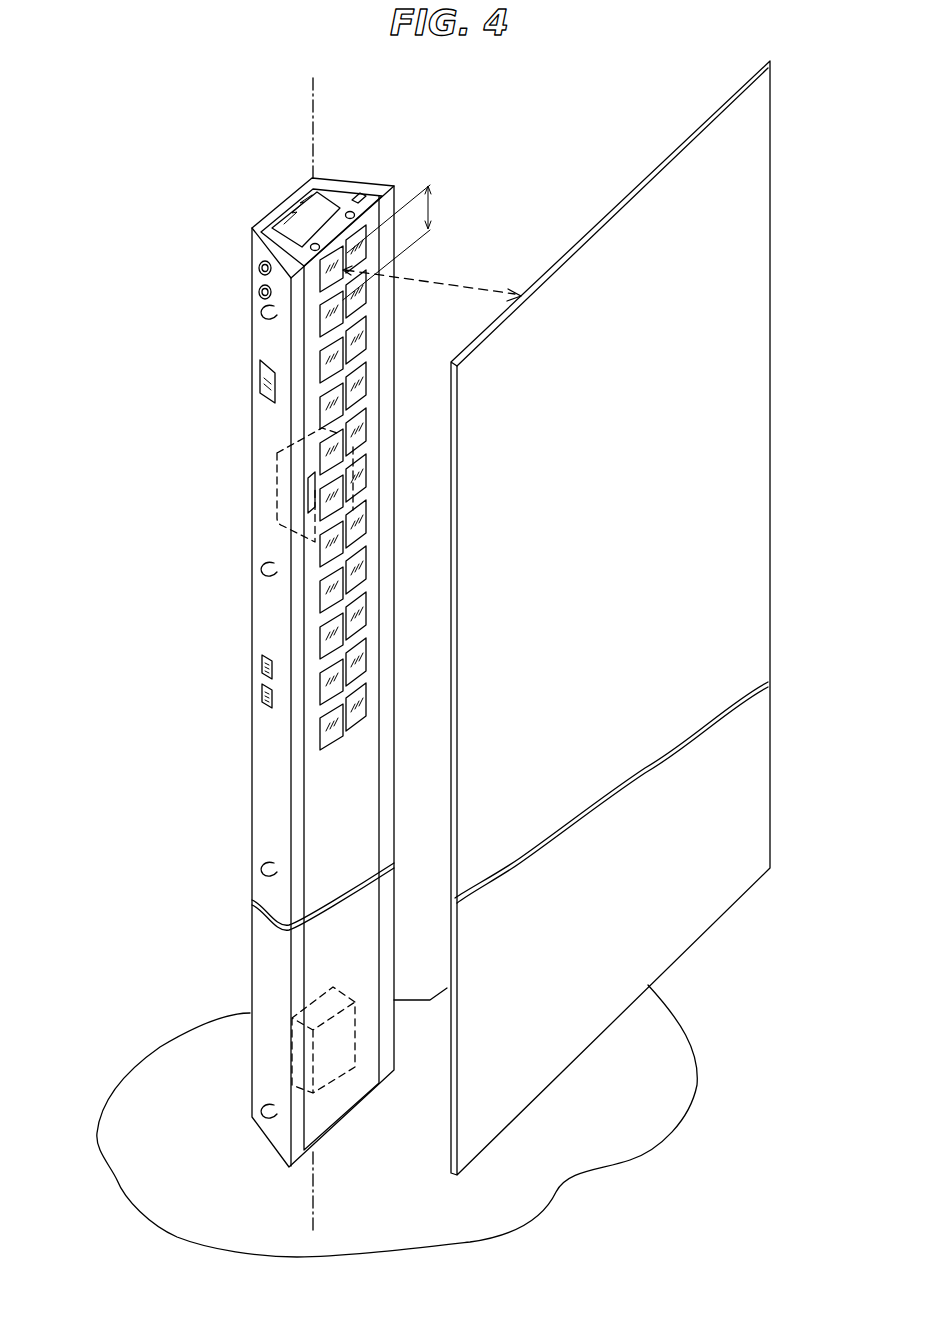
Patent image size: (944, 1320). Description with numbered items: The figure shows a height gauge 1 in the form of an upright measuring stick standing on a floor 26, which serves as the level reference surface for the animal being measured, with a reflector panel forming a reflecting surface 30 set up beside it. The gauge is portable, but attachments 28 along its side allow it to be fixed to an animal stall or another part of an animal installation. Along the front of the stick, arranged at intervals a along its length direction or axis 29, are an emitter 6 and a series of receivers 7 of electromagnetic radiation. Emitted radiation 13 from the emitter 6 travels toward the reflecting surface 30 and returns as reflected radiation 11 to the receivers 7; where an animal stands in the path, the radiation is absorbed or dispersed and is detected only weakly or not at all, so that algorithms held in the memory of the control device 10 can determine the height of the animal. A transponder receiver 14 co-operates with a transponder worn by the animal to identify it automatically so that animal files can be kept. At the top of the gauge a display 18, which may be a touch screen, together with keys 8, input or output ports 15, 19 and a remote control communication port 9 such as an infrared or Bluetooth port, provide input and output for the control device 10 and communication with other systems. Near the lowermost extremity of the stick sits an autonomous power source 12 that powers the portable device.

The height gauge 1 is at (156, 626).
The emitter 6 is at (348, 347).
The receivers 7 is at (332, 386).
The keys 8 is at (259, 292).
The remote control communication port 9 is at (260, 376).
The control device 10 is at (276, 462).
The reflected radiation 11 is at (436, 287).
The autonomous power source 12 is at (300, 1013).
The emitted radiation 13 is at (470, 281).
The transponder receiver 14 is at (307, 490).
The input or output port 15 is at (261, 695).
The display 18 is at (291, 228).
The input or output port 19 is at (261, 665).
The floor 26 is at (658, 1063).
The attachments 28 is at (263, 318).
The axis 29 is at (312, 1203).
The reflecting surface 30 is at (618, 205).
The intervals a is at (397, 242).